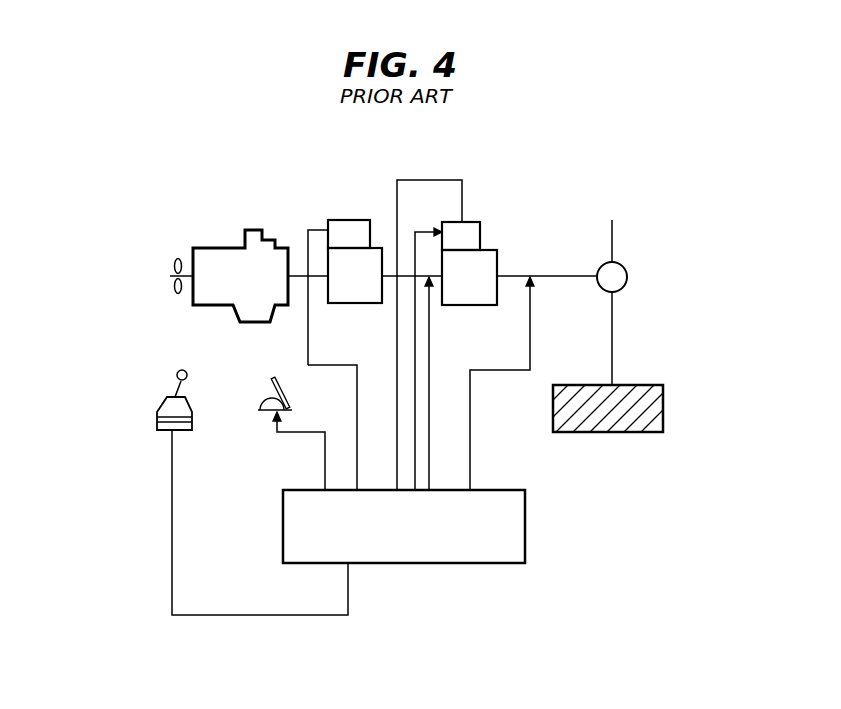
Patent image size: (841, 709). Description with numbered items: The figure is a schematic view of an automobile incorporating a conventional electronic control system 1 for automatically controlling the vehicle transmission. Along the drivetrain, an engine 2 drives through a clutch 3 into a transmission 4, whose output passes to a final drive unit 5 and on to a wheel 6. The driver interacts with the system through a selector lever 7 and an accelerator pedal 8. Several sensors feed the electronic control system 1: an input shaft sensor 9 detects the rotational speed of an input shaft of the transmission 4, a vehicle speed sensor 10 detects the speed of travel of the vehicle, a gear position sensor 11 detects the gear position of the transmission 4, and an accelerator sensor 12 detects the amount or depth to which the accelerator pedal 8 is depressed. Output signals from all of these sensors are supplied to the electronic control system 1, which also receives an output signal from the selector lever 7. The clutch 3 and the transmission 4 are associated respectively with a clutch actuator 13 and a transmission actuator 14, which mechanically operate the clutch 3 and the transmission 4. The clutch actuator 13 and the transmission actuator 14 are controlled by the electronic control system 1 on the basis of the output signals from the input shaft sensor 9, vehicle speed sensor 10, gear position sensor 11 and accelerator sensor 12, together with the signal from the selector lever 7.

The electronic control system 1 is at (525, 528).
The engine 2 is at (221, 248).
The clutch 3 is at (330, 257).
The transmission 4 is at (498, 258).
The final drive unit 5 is at (627, 270).
The wheel 6 is at (648, 385).
The selector lever 7 is at (165, 400).
The accelerator pedal 8 is at (278, 380).
The input shaft sensor 9 is at (432, 292).
The vehicle speed sensor 10 is at (535, 282).
The gear position sensor 11 is at (435, 228).
The accelerator sensor 12 is at (273, 418).
The clutch actuator 13 is at (350, 220).
The transmission actuator 14 is at (472, 222).